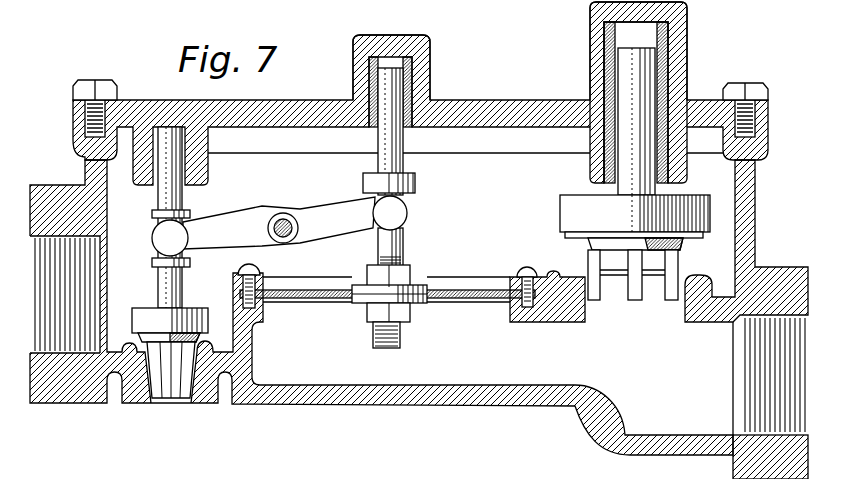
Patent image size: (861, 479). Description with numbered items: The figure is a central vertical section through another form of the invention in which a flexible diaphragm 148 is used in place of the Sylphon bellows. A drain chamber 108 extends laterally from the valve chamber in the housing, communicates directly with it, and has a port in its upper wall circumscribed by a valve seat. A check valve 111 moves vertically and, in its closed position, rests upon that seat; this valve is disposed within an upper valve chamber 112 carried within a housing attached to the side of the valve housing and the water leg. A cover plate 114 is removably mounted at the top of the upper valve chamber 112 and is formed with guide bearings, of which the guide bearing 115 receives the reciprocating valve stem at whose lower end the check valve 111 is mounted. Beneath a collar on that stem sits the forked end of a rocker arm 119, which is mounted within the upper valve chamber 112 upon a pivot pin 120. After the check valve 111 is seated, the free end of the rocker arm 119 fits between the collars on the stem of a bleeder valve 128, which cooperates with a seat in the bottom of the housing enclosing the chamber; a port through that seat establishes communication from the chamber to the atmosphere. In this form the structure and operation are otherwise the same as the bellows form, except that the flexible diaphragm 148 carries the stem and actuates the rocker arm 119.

The drain chamber 108 is at (553, 360).
The check valve 111 is at (578, 208).
The upper valve chamber 112 is at (493, 167).
The cover plate 114 is at (417, 50).
The guide bearing 115 is at (648, 30).
The rocker arm 119 is at (330, 213).
The pivot pin 120 is at (278, 212).
The bleeder valve 128 is at (200, 322).
The flexible diaphragm 148 is at (470, 288).